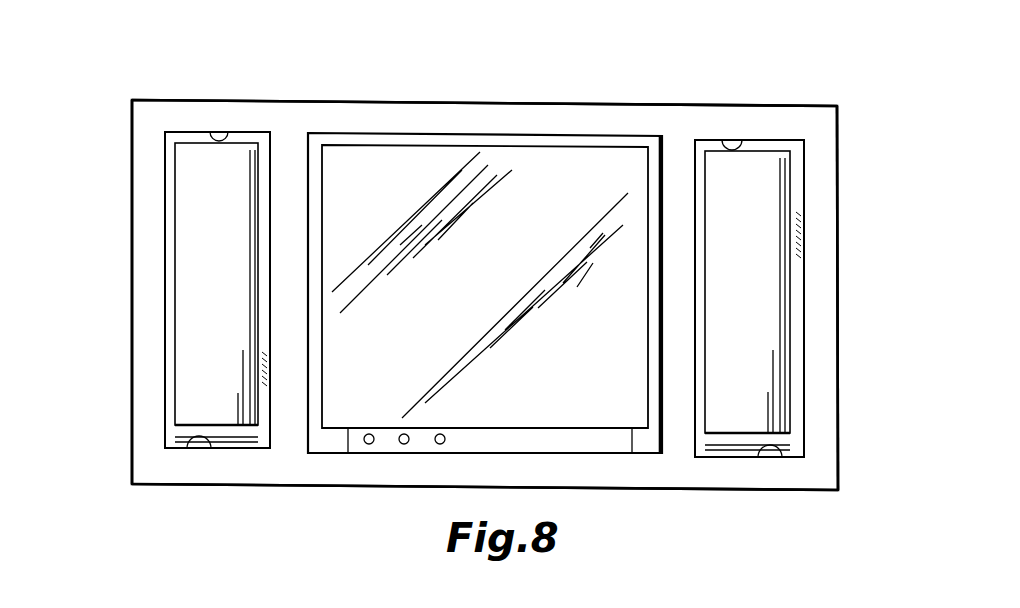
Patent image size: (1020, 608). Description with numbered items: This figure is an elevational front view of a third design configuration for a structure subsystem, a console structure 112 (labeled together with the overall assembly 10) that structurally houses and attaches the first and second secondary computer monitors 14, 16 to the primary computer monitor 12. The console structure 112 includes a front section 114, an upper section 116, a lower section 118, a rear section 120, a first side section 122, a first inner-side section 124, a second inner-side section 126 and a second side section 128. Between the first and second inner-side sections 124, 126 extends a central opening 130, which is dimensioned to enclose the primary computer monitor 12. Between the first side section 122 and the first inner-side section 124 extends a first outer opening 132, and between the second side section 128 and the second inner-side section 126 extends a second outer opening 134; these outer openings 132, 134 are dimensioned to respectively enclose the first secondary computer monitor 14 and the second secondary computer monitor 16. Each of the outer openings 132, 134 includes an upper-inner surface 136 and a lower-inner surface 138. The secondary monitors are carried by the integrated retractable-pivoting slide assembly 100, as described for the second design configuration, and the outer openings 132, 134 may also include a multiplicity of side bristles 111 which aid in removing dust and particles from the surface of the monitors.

The window assembly 10 is at (520, 248).
The console structure 112 is at (890, 40).
The first side section 122 is at (142, 271).
The second side section 128 is at (818, 280).
The lower section 118 is at (337, 470).
The upper section 116 is at (511, 111).
The first outer opening 132 is at (170, 141).
The first inner-side section 124 is at (308, 204).
The front section 114 is at (285, 310).
The side bristles 111 is at (268, 363).
The integrated retractable-pivoting slide assembly 100 is at (178, 435).
The lower-inner surface 138 is at (197, 447).
The upper-inner surface 136 is at (230, 140).
The first secondary computer monitor 14 is at (213, 403).
The second secondary computer monitor 16 is at (750, 414).
The second outer opening 134 is at (790, 148).
The second inner-side section 126 is at (665, 205).
The rear section 120 is at (376, 125).
The central opening 130 is at (602, 138).
The primary computer monitor 12 is at (481, 289).